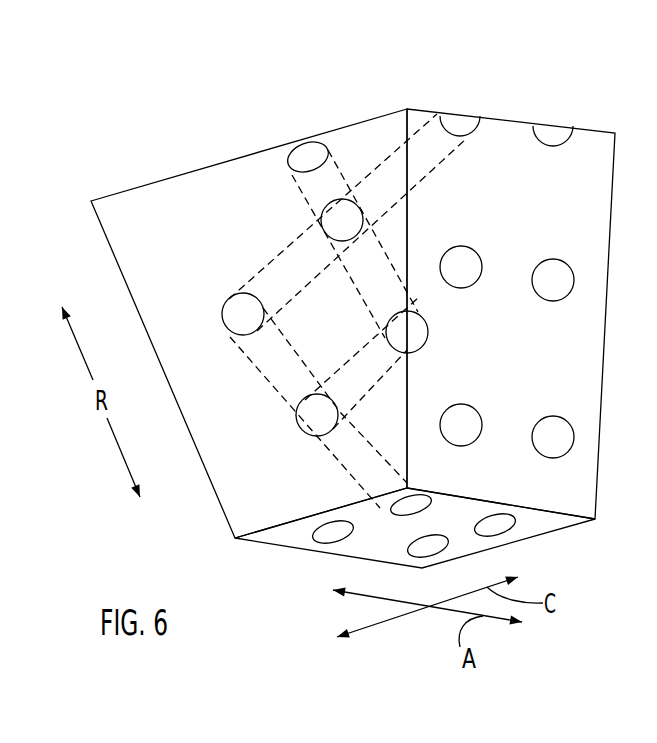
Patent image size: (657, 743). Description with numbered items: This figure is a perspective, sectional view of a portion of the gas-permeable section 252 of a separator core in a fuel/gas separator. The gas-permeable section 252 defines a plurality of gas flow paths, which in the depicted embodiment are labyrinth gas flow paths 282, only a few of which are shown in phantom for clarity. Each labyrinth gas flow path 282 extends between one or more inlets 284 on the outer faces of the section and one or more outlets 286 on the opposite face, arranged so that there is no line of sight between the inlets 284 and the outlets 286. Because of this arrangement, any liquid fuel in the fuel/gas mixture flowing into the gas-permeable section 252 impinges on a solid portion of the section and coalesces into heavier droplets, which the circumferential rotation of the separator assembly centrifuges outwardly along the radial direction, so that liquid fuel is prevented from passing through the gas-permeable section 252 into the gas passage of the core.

The gas-permeable section 252 is at (156, 163).
The labyrinth gas flow paths 282 is at (282, 366).
The inlets 284 is at (460, 128).
The outlets 286 is at (415, 509).